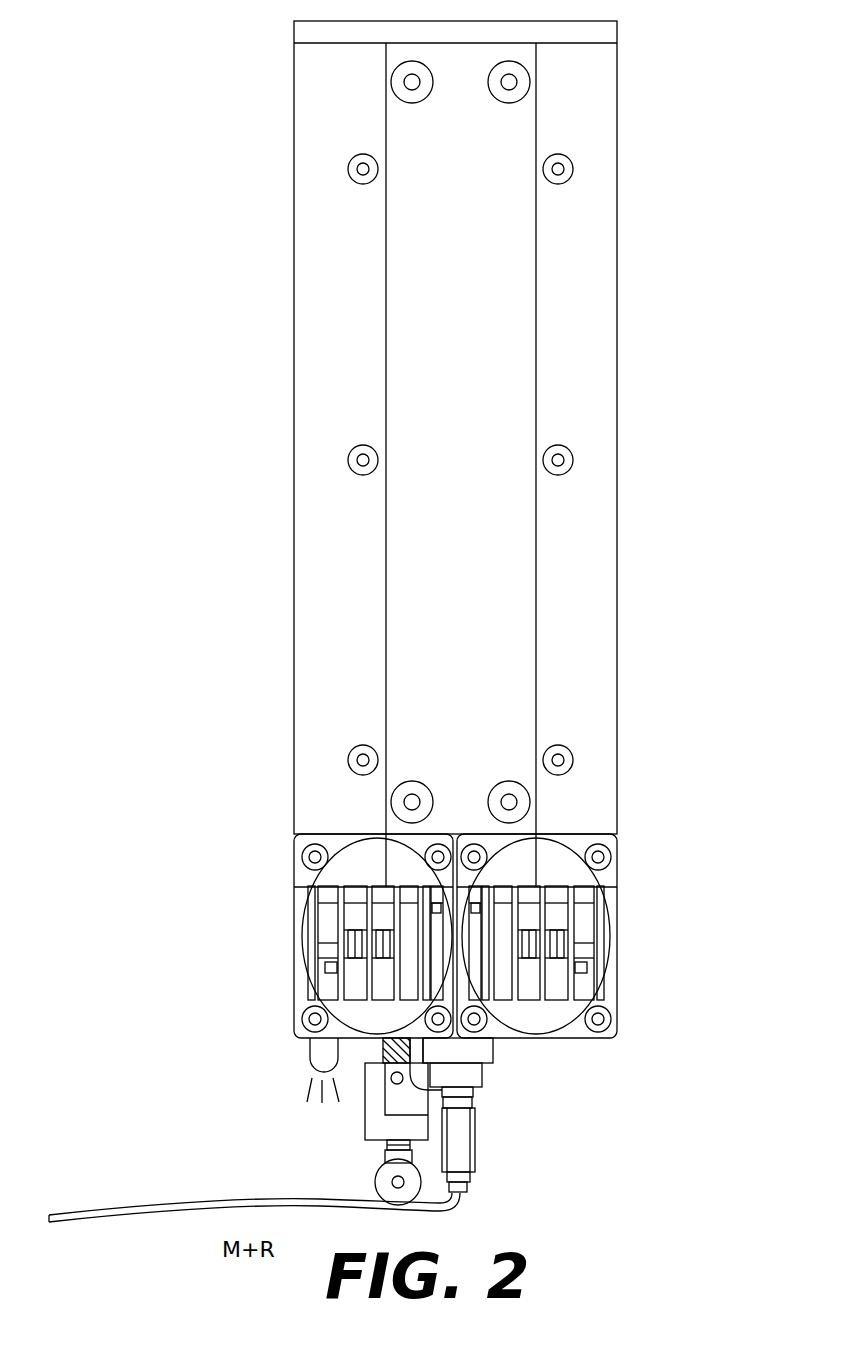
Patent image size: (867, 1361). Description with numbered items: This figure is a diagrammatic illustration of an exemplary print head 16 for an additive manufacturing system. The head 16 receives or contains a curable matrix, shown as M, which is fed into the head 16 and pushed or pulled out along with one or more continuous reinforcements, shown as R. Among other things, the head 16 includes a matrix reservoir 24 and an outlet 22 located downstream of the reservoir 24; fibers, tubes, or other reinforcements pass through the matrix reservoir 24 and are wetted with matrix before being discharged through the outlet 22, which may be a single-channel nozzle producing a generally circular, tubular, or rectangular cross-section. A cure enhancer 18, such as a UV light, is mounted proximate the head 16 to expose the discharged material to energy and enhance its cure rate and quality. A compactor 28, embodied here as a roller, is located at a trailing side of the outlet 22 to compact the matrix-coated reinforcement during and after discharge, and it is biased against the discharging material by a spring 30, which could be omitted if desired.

The head 16 is at (736, 92).
The cure enhancer 18 is at (310, 1057).
The outlet 22 is at (475, 1172).
The matrix reservoir 24 is at (444, 515).
The compactor 28 is at (380, 1177).
The spring 30 is at (408, 1057).